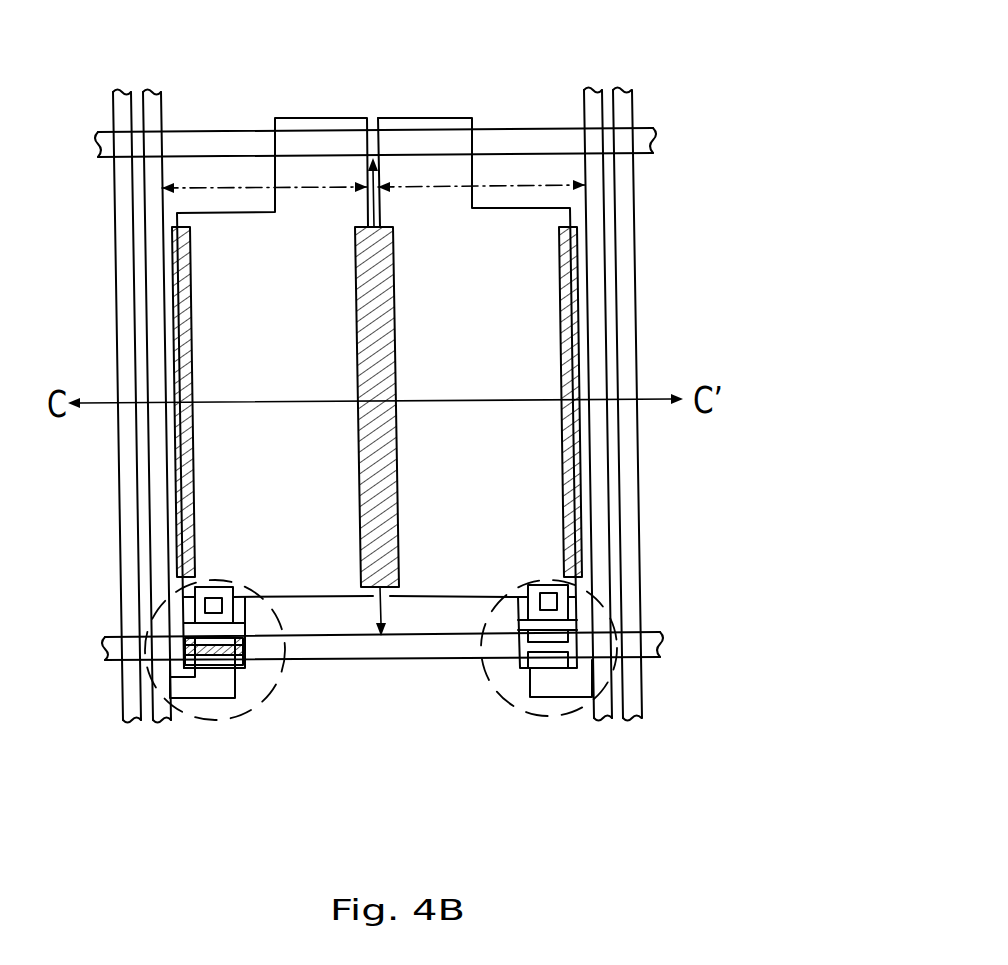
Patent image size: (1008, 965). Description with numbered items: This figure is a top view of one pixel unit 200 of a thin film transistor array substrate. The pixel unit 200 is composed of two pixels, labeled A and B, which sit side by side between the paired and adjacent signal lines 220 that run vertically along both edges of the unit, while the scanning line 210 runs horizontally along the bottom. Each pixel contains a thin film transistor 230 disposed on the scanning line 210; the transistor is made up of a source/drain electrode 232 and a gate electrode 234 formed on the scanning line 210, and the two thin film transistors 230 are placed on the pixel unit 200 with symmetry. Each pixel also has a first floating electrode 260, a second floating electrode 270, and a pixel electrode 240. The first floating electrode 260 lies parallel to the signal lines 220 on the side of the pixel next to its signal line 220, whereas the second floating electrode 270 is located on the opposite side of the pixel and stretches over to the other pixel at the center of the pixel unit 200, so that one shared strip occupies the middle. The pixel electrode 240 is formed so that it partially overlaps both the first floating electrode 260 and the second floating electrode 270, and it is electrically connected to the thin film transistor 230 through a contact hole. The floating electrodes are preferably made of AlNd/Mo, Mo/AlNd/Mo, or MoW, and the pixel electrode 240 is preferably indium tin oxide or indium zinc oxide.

The pixel unit 200 is at (622, 74).
The scanning line 210 is at (653, 647).
The signal line 220 is at (633, 707).
The thin film transistor 230 is at (197, 716).
The source/drain electrode 232 is at (217, 638).
The gate electrode 234 is at (193, 655).
The pixel electrode 240 is at (343, 572).
The first floating electrode 260 is at (178, 328).
The second floating electrode 270 is at (397, 473).